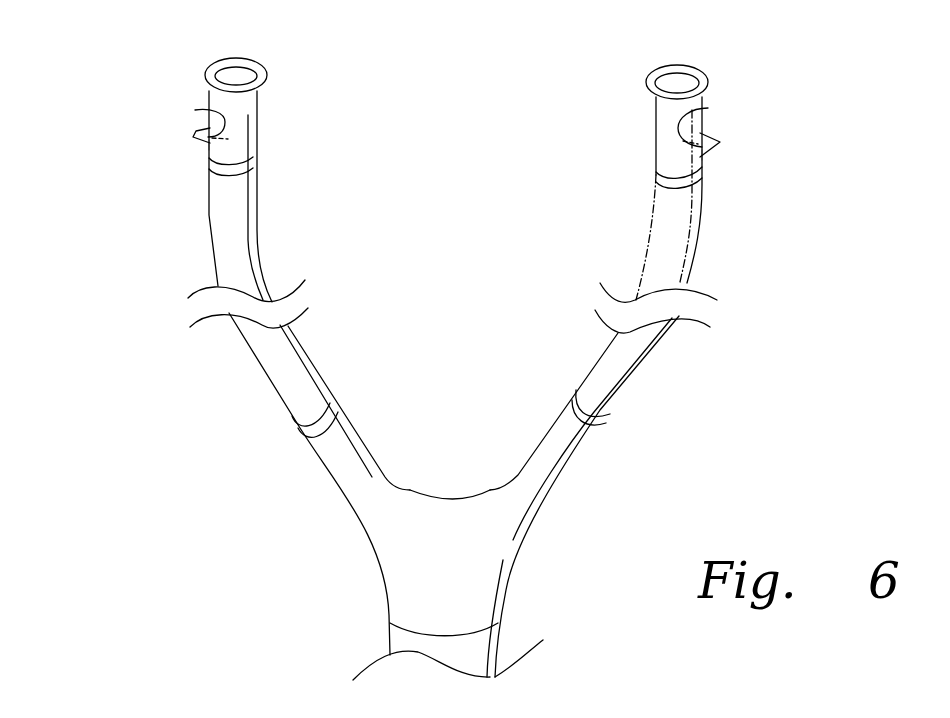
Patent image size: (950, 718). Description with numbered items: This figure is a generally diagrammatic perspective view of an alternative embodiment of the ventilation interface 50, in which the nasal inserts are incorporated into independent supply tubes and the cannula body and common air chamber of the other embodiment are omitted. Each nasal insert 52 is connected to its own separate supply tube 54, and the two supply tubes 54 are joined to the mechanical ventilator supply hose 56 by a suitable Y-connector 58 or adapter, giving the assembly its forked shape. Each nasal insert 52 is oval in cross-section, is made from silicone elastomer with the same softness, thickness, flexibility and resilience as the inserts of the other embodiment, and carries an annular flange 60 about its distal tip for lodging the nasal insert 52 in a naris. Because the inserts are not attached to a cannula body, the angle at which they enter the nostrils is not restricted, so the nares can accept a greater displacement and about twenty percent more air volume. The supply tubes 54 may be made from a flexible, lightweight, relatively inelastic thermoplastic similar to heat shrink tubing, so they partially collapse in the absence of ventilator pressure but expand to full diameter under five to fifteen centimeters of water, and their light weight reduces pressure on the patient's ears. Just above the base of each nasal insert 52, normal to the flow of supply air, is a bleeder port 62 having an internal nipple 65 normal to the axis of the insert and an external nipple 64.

The ventilation interface 50 is at (206, 419).
The nasal insert 52 is at (259, 133).
The supply tube 54 is at (315, 372).
The mechanical ventilator supply hose 56 is at (390, 645).
The Y-connector 58 is at (410, 490).
The annular flange 60 is at (266, 82).
The bleeder port 62 is at (181, 163).
The external nipple 64 is at (193, 136).
The internal nipple 65 is at (195, 110).